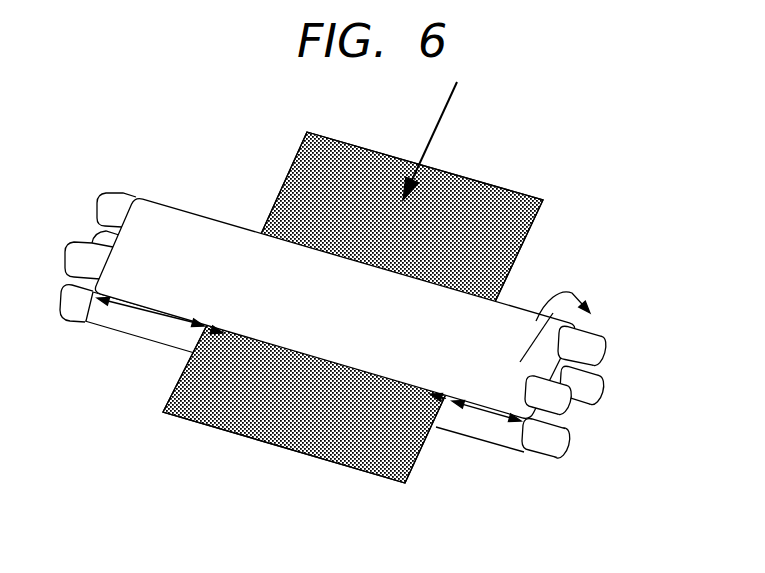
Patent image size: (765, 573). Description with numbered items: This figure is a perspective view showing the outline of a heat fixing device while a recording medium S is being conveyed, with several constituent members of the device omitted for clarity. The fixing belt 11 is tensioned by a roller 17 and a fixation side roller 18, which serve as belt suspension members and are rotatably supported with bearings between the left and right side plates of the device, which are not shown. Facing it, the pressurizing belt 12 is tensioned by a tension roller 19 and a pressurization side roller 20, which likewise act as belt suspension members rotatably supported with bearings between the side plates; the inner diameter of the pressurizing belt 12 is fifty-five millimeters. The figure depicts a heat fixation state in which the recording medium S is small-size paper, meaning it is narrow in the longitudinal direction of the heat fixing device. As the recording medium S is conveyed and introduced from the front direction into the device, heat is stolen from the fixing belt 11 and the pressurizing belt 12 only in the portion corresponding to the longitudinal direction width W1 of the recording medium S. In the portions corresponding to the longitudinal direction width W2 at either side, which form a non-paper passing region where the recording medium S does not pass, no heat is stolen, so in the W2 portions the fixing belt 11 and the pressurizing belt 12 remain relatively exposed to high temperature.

The fixing belt 11 is at (175, 222).
The pressurizing belt 12 is at (110, 334).
The roller 17 is at (600, 348).
The fixation side roller 18 is at (567, 408).
The tension roller 19 is at (600, 388).
The pressurization side roller 20 is at (550, 460).
The recording medium S is at (502, 200).
The longitudinal direction width W1 is at (312, 362).
The longitudinal direction width W2 is at (152, 316).